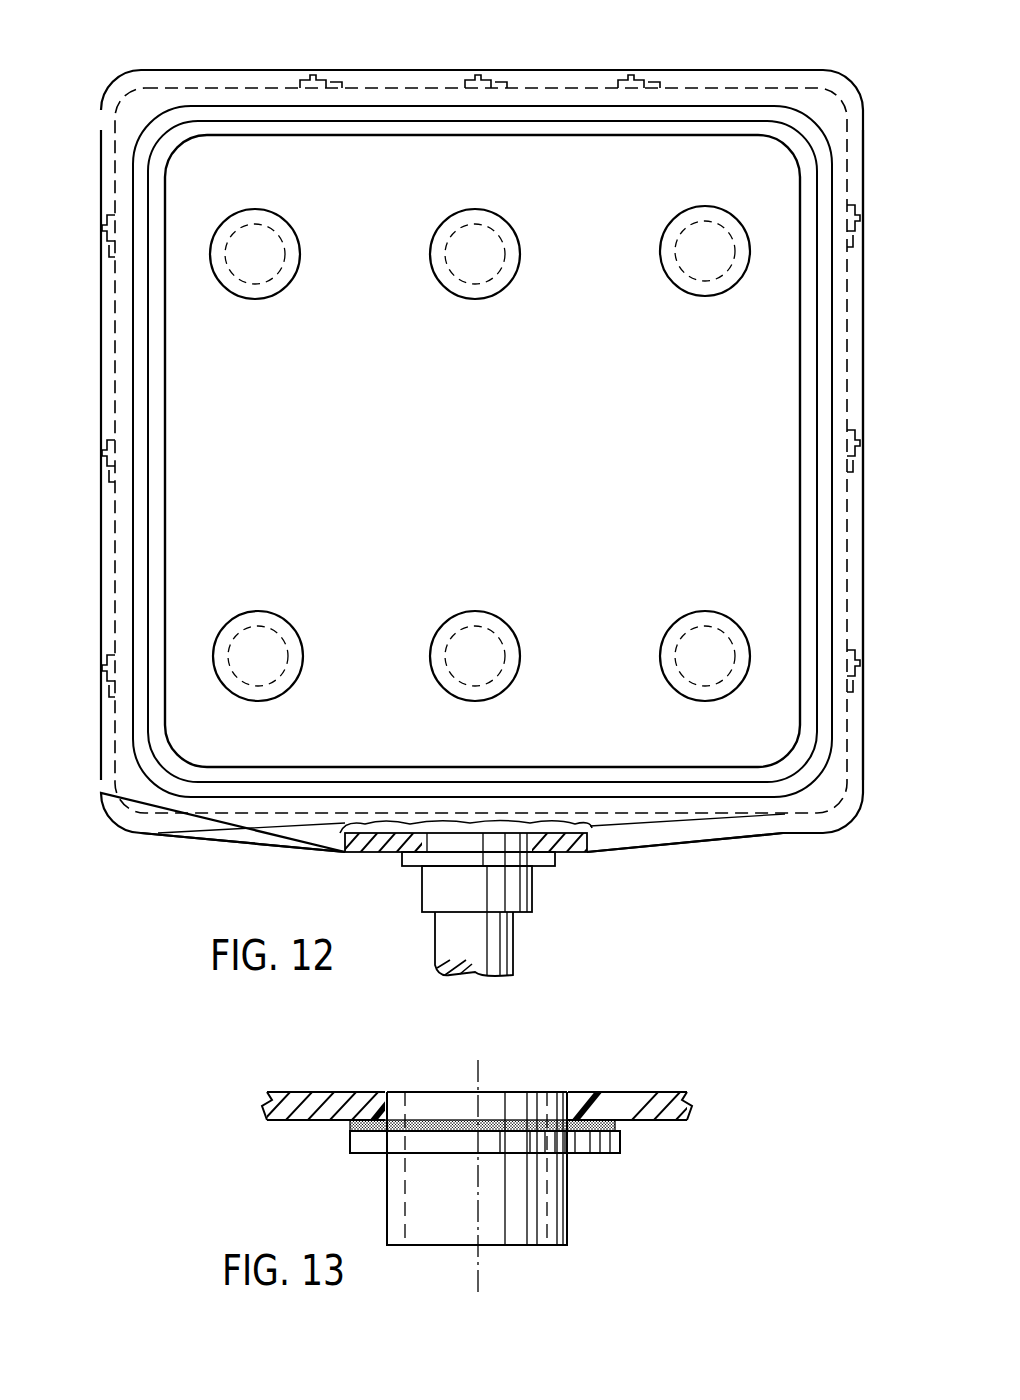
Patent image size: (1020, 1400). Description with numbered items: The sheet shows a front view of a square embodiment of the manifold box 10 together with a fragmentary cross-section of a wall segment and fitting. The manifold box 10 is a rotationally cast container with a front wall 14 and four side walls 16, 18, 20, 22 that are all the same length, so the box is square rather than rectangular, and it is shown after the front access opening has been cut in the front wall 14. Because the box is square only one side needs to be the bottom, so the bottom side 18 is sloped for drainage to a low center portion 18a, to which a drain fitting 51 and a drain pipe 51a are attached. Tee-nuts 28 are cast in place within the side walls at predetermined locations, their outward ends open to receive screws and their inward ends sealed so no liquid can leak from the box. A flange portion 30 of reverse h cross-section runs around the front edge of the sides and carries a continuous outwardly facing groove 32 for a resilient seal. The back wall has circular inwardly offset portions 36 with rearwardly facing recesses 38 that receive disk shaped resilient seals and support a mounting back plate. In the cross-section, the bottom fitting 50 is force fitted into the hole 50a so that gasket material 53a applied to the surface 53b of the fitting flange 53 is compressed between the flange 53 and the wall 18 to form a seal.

In FIG. 12, the manifold box 10 is at (684, 60).
In FIG. 12, the front wall 14 is at (103, 192).
In FIG. 12, the side wall 16 is at (864, 372).
In FIG. 12, the bottom side wall 18 is at (742, 843).
In FIG. 13, the bottom side wall 18 is at (627, 1122).
In FIG. 12, the low center portion 18a is at (563, 857).
In FIG. 12, the side wall 20 is at (100, 315).
In FIG. 12, the side wall 22 is at (237, 70).
In FIG. 12, the tee-nuts 28 is at (102, 455).
In FIG. 12, the flange portion 30 is at (118, 356).
In FIG. 12, the groove 32 is at (137, 403).
In FIG. 12, the inwardly offset portions 36 is at (428, 243).
In FIG. 12, the recesses 38 is at (440, 272).
In FIG. 12, the drain fitting 51 is at (533, 895).
In FIG. 12, the drain pipe 51a is at (515, 950).
In FIG. 13, the bottom fitting 50 is at (568, 1223).
In FIG. 13, the hole 50a is at (368, 1122).
In FIG. 13, the fitting flange 53 is at (370, 1148).
In FIG. 13, the gasket material 53a is at (370, 1120).
In FIG. 13, the flange surface 53b is at (488, 1122).